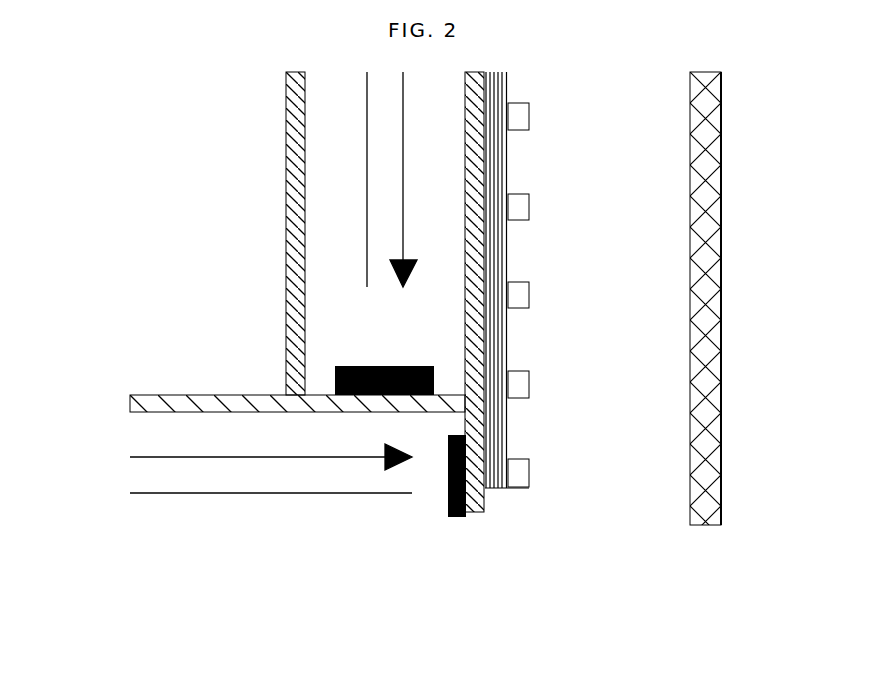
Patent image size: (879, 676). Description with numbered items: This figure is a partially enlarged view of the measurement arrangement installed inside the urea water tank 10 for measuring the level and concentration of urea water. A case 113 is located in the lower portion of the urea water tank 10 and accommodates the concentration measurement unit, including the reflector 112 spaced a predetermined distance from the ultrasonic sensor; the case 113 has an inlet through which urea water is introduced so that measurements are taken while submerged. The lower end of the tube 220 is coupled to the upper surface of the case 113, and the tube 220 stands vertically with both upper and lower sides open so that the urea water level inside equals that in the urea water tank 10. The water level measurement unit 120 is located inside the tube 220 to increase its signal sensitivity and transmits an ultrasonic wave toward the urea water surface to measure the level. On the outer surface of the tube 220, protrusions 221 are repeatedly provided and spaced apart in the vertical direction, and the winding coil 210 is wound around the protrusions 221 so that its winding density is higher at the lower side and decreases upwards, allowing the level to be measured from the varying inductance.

The urea water tank 10 is at (722, 343).
The reflector 112 is at (452, 517).
The case 113 is at (135, 400).
The water level measurement unit 120 is at (342, 397).
The winding coil 210 is at (522, 420).
The tube 220 is at (290, 285).
The protrusions 221 is at (522, 213).